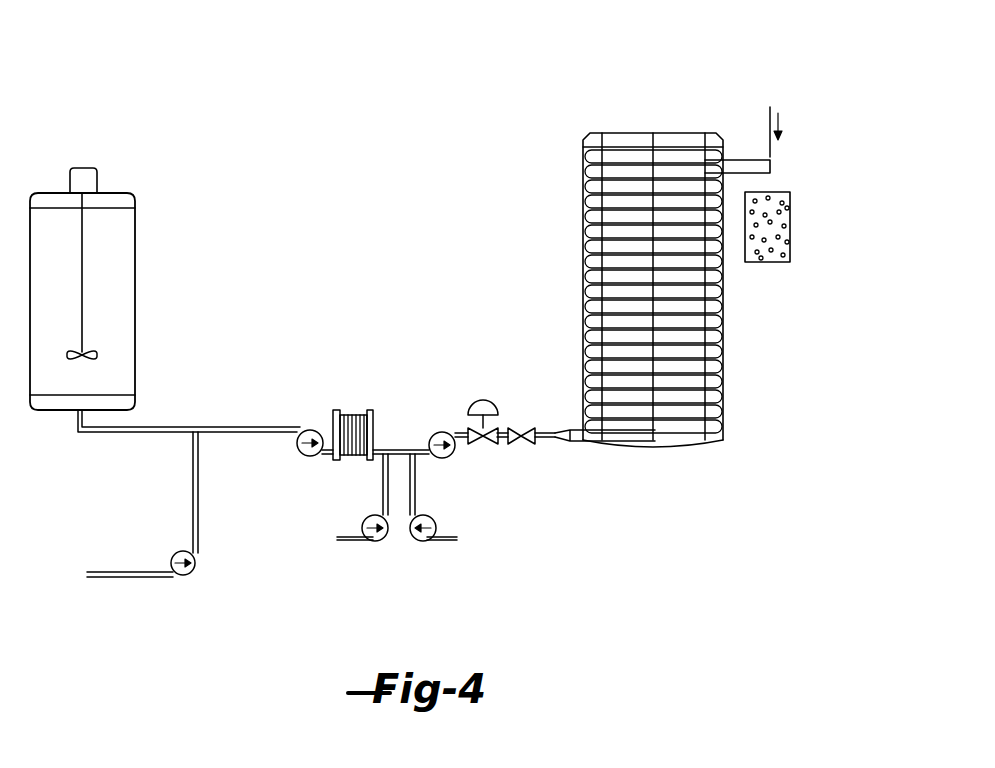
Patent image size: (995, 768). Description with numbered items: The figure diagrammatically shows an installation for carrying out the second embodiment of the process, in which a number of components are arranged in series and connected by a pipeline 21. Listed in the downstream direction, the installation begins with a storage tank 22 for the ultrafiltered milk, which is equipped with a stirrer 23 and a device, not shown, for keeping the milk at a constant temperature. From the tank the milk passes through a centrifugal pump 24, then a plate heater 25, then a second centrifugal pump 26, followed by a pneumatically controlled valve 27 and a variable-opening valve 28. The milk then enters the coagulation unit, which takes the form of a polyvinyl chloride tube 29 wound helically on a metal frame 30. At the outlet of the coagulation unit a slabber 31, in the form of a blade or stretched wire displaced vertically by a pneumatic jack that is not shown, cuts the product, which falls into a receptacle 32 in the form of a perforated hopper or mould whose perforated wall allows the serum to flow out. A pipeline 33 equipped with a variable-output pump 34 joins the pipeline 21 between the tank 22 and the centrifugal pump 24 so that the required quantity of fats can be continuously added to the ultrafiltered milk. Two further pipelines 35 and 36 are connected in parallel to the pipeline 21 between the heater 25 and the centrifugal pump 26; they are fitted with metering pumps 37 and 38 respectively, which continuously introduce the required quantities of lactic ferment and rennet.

The pipeline 21 is at (145, 433).
The storage tank 22 is at (136, 273).
The stirrer 23 is at (83, 310).
The centrifugal pump 24 is at (308, 430).
The plate heater 25 is at (357, 412).
The centrifugal pump 26 is at (455, 452).
The pneumatically controlled valve 27 is at (482, 400).
The variable-opening valve 28 is at (520, 428).
The polyvinyl chloride tube 29 is at (595, 247).
The metal frame 30 is at (583, 143).
The slabber 31 is at (770, 132).
The receptacle 32 is at (753, 263).
The pipeline 33 is at (193, 510).
The variable-output pump 34 is at (197, 569).
The pipeline 35 is at (383, 490).
The pipeline 36 is at (414, 490).
The metering pump 37 is at (377, 541).
The metering pump 38 is at (422, 541).